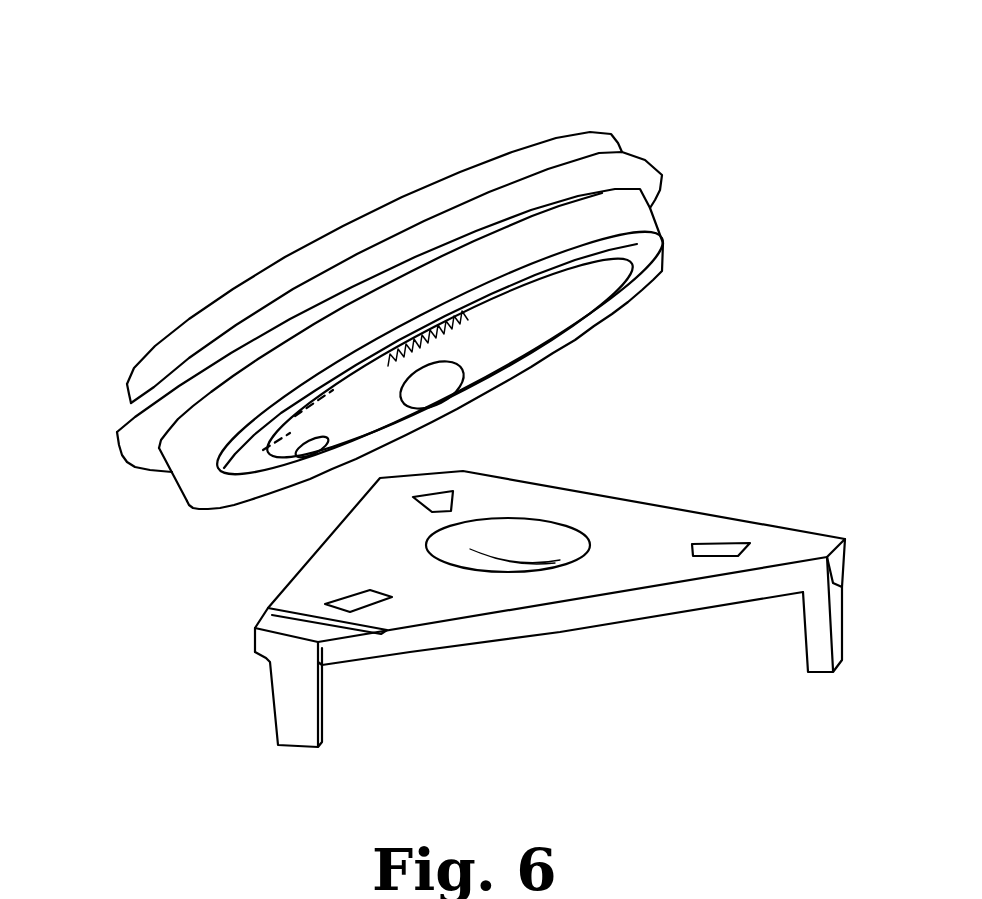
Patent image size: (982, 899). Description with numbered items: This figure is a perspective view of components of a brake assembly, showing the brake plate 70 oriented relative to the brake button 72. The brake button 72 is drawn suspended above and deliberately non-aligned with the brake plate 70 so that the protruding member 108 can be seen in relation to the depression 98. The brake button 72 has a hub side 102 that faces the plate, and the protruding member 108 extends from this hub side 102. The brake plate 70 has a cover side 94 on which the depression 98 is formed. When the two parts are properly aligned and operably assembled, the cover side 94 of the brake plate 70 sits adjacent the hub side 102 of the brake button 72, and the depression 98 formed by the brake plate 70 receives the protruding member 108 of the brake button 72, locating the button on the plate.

The brake button 72 is at (547, 157).
The hub side 102 is at (180, 486).
The protruding member 108 is at (437, 387).
The cover side 94 is at (298, 585).
The depression 98 is at (558, 528).
The brake plate 70 is at (289, 660).